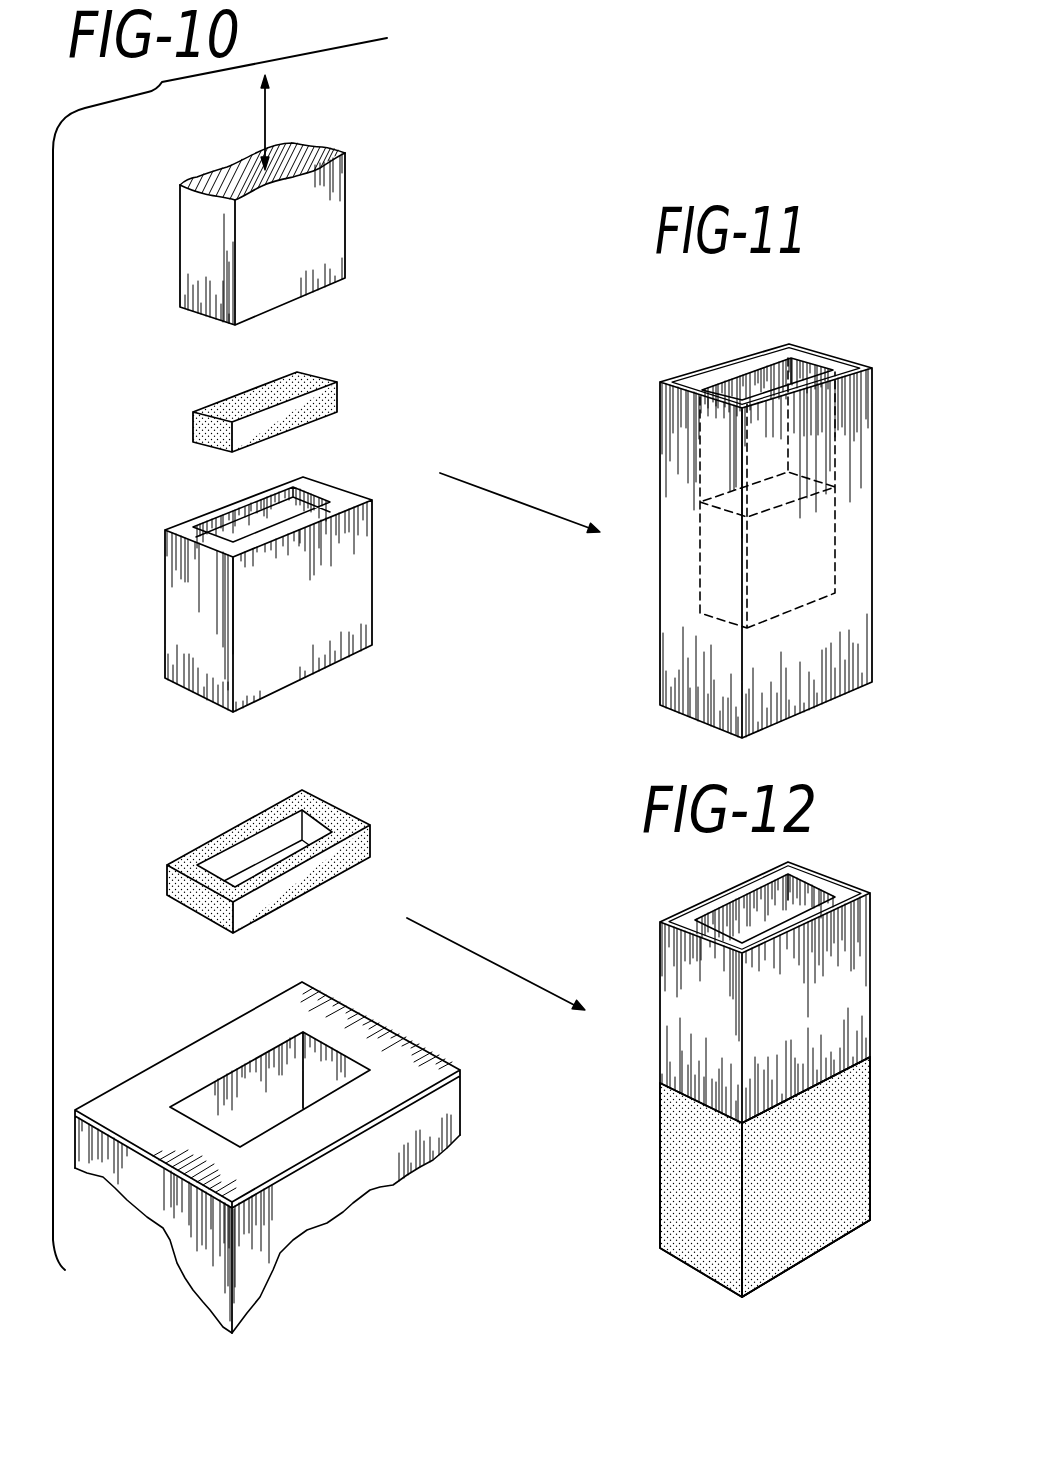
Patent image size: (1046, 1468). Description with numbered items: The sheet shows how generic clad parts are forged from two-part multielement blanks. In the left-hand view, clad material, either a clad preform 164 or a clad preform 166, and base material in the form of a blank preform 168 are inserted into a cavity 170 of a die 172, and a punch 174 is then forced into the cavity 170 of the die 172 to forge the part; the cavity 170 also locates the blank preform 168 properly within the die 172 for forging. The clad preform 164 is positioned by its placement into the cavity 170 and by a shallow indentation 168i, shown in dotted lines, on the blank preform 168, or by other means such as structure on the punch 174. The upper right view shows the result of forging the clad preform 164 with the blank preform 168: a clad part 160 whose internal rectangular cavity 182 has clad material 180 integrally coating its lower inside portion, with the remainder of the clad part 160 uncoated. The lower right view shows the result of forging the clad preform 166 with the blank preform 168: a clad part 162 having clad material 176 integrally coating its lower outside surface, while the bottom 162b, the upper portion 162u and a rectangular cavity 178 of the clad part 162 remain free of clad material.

In FIG. 11, the clad part 160 is at (702, 463).
In FIG. 12, the clad part 162 is at (655, 1123).
In FIG. 12, the upper portion 162u is at (688, 983).
In FIG. 12, the bottom 162b is at (707, 1273).
In FIG. 10, the clad preform 164 is at (225, 405).
In FIG. 10, the clad preform 166 is at (337, 818).
In FIG. 10, the blank preform 168 is at (333, 588).
In FIG. 10, the shallow indentation 168i is at (280, 517).
In FIG. 10, the cavity 170 is at (220, 1098).
In FIG. 10, the die 172 is at (333, 1192).
In FIG. 10, the punch 174 is at (330, 193).
In FIG. 12, the clad material 176 is at (788, 1227).
In FIG. 12, the rectangular cavity 178 is at (753, 917).
In FIG. 11, the clad material 180 is at (703, 550).
In FIG. 11, the internal rectangular cavity 182 is at (755, 383).